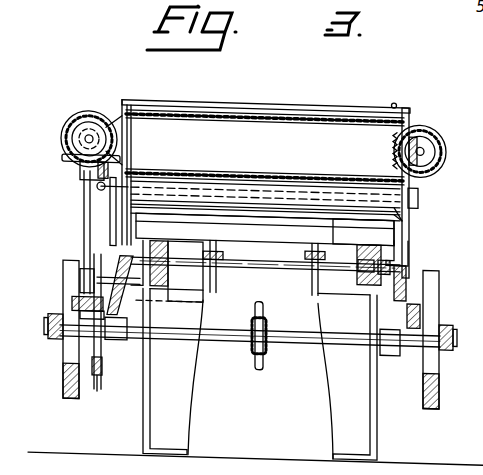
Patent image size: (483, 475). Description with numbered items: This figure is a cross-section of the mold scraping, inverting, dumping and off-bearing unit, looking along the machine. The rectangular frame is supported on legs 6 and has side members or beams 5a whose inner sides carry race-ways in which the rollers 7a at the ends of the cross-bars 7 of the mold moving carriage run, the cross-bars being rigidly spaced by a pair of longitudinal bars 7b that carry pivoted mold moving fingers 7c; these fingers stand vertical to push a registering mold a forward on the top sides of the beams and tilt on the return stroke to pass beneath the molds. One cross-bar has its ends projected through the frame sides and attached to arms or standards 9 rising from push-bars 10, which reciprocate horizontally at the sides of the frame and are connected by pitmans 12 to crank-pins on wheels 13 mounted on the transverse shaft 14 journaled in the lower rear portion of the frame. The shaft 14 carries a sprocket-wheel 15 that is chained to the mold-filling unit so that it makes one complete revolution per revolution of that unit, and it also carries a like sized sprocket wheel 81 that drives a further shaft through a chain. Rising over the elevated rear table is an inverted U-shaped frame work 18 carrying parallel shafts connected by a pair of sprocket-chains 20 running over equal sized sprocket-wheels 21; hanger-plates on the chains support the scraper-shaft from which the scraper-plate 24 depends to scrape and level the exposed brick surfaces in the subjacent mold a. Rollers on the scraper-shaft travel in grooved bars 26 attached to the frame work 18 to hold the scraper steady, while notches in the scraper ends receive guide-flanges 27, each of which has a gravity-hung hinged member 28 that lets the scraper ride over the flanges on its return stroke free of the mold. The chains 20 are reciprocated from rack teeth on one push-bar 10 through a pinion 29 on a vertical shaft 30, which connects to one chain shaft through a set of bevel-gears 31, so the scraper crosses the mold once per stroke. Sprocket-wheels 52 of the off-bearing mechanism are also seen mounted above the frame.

The inverted U-shaped frame work 18 is at (133, 163).
The sprocket-chains 20 is at (278, 121).
The sprocket-wheels 21 is at (90, 120).
The bevel-gears 31 is at (66, 157).
The bars 26 is at (276, 195).
The guide-flanges 27 is at (212, 208).
The mold a is at (265, 229).
The sprocket-wheels 52 is at (363, 252).
The pivoted mold moving fingers 7c is at (319, 255).
The hinged member 28 is at (405, 214).
The cross-bars 7 is at (258, 262).
The longitudinal bars 7b is at (217, 258).
The rollers 7a is at (362, 272).
The side members or beams 5a is at (407, 252).
The arms or standards 9 is at (121, 272).
The scraper-plate 24 is at (116, 212).
The vertical shaft 30 is at (84, 230).
The push-bars 10 is at (113, 321).
The pinion 29 is at (78, 305).
The sprocket-wheel 15 is at (95, 385).
The wheels 13 is at (63, 377).
The pitmans 12 is at (48, 330).
The shaft 14 is at (302, 348).
The sprocket wheel 81 is at (258, 360).
The legs 6 is at (255, 375).